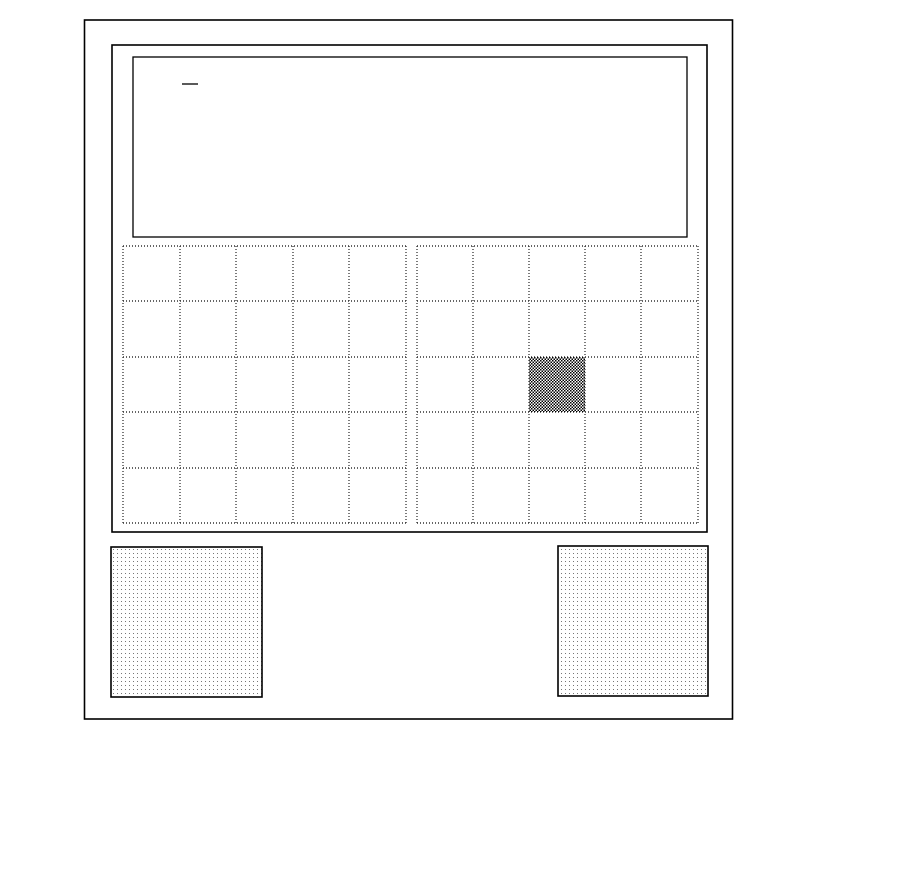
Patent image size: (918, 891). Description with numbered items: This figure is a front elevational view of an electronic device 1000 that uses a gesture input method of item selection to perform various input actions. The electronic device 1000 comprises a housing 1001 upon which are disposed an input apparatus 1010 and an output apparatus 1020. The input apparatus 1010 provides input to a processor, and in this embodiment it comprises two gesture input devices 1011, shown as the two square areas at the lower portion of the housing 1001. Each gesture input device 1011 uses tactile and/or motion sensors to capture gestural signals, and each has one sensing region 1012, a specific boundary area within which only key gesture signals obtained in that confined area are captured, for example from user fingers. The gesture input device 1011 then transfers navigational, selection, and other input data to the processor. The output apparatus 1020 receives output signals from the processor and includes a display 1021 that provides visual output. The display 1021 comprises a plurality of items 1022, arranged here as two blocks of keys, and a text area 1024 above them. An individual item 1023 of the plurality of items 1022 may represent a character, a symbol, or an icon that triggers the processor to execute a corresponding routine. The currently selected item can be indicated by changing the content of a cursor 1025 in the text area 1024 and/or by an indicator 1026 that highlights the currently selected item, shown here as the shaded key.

The electronic device 1000 is at (448, 366).
The housing 1001 is at (733, 80).
The input apparatus 1010 is at (409, 650).
The gesture input device 1011 is at (409, 621).
The sensing region 1012 is at (227, 617).
The output apparatus 1020 is at (715, 139).
The display 1021 is at (408, 147).
The plurality of items 1022 is at (443, 532).
The item 1023 is at (603, 413).
The text area 1024 is at (157, 148).
The cursor 1025 is at (196, 86).
The indicator 1026 is at (583, 380).